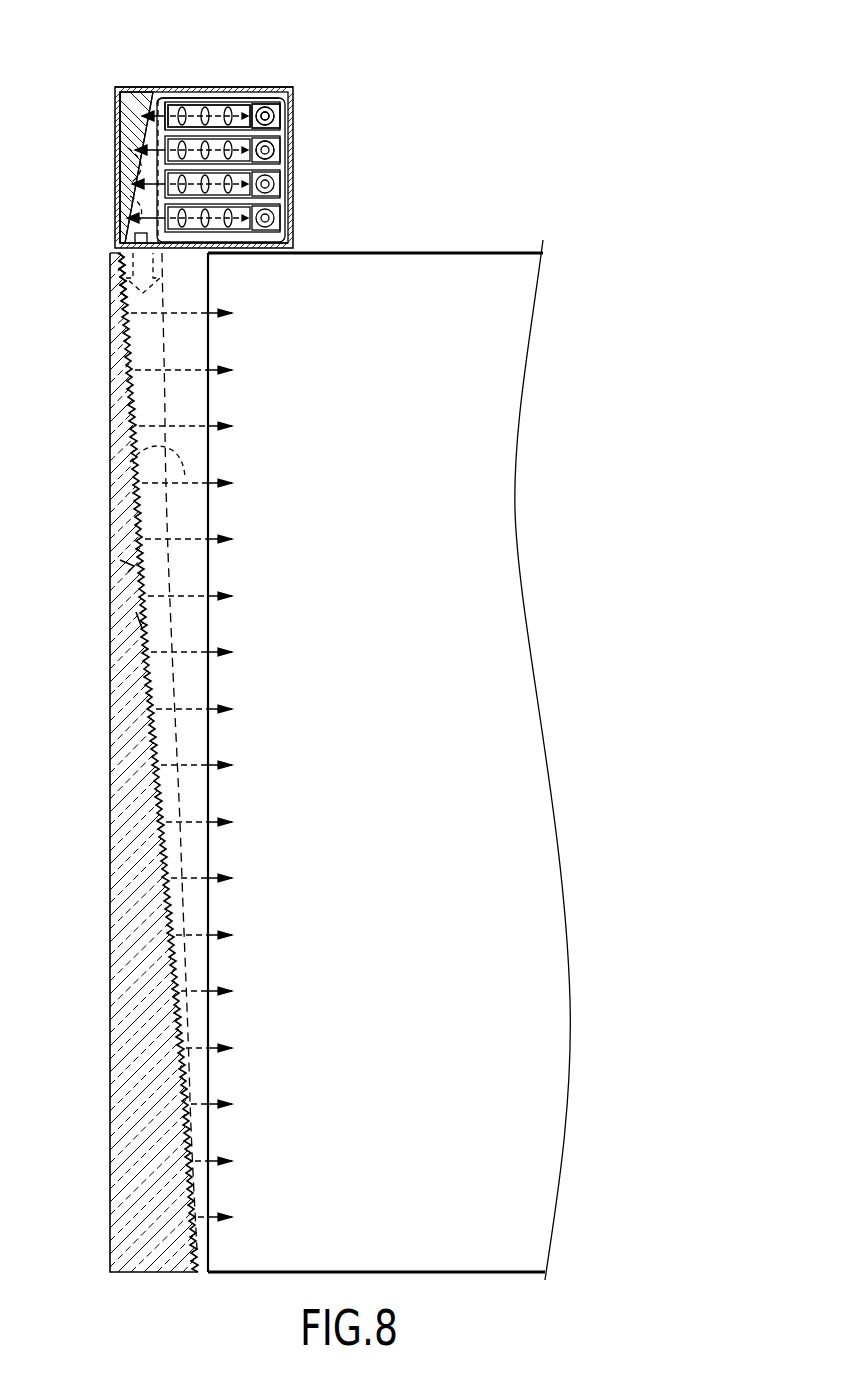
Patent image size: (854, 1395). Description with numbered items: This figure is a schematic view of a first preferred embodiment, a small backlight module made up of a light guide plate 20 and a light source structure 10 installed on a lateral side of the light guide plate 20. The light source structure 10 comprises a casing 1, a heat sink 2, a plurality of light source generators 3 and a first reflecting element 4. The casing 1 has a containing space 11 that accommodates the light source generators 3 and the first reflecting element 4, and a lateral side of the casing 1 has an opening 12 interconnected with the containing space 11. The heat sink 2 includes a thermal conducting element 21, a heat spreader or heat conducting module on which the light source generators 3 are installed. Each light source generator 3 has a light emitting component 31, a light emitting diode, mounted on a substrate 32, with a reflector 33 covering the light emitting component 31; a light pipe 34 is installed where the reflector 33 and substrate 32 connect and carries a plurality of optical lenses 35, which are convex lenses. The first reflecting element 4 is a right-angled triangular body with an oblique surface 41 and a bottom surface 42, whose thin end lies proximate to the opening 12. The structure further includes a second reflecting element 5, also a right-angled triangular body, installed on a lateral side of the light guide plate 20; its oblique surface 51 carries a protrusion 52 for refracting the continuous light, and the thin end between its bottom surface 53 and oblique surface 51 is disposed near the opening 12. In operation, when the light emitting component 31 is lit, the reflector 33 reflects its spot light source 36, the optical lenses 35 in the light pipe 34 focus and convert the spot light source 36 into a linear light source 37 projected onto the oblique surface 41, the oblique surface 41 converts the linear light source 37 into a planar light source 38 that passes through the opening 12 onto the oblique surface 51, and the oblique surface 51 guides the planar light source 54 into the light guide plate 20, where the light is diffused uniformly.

The casing 1 is at (290, 185).
The heat sink 2 is at (186, 94).
The light source generator 3 is at (267, 97).
The first reflecting element 4 is at (125, 150).
The second reflecting element 5 is at (122, 650).
The light source structure 10 is at (298, 158).
The containing space 11 is at (295, 242).
The opening 12 is at (128, 253).
The light guide plate 20 is at (464, 262).
The thermal conducting element 21 is at (228, 98).
The light emitting component 31 is at (283, 99).
The substrate 32 is at (292, 140).
The reflector 33 is at (257, 100).
The light pipe 34 is at (197, 100).
The optical lens 35 is at (168, 100).
The spot light source 36 is at (295, 113).
The linear light source 37 is at (120, 207).
The planar light source 38 is at (128, 300).
The oblique surface 41 is at (135, 183).
The bottom surface 42 is at (116, 128).
The oblique surface 51 is at (152, 572).
The protrusion 52 is at (148, 620).
The bottom surface 53 is at (110, 705).
The planar light source 54 is at (130, 462).